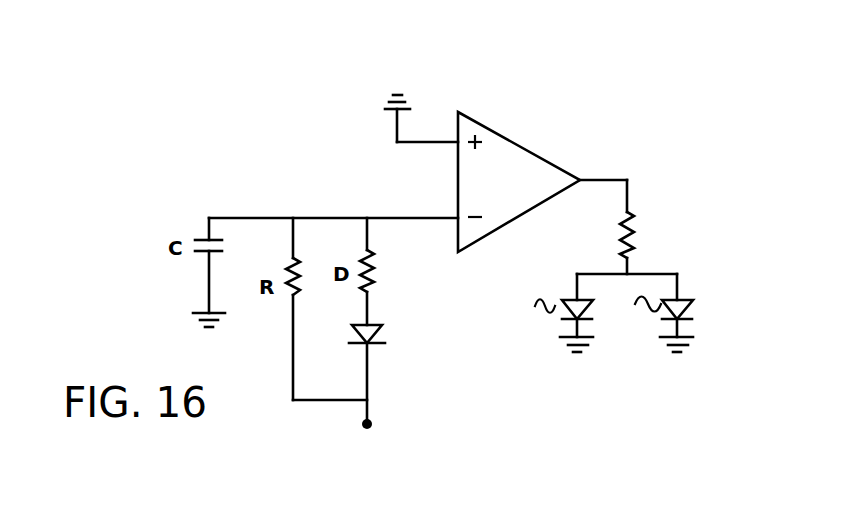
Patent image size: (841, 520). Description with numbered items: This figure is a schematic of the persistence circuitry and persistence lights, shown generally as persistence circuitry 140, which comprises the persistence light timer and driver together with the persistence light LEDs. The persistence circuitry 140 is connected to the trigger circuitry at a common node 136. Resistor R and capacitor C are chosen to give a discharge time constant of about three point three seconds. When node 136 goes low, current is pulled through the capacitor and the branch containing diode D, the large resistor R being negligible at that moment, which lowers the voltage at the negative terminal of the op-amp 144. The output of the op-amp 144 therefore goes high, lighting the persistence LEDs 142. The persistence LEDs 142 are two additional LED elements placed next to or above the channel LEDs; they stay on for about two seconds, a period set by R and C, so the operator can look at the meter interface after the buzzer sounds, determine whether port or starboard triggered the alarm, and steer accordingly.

The op-amp 144 is at (518, 143).
The persistence circuitry 140 is at (670, 156).
The persistence LEDs 142 is at (714, 308).
The common node 136 is at (367, 439).